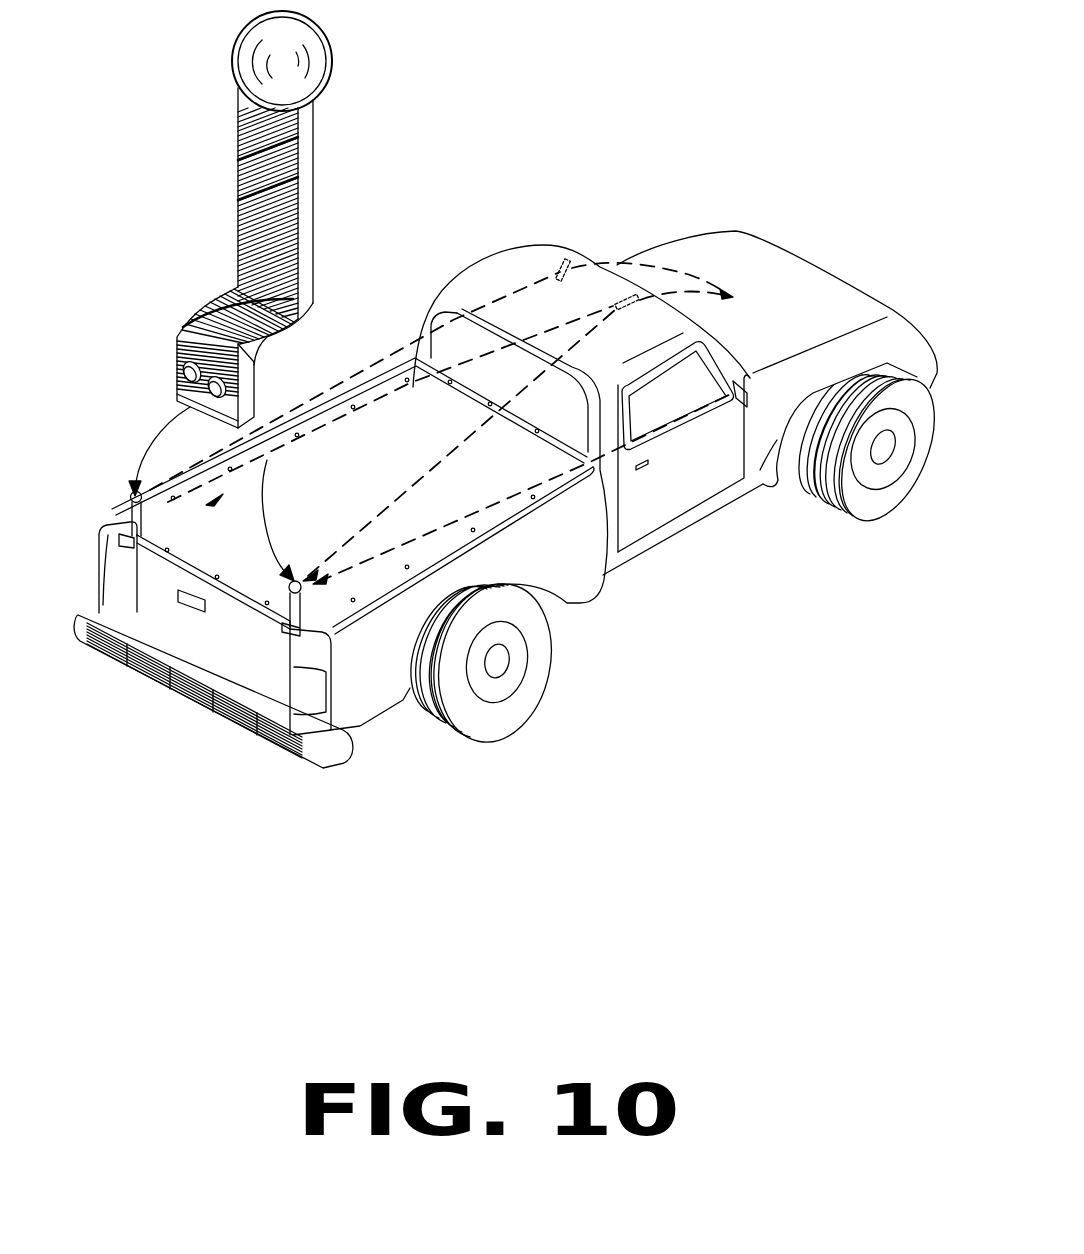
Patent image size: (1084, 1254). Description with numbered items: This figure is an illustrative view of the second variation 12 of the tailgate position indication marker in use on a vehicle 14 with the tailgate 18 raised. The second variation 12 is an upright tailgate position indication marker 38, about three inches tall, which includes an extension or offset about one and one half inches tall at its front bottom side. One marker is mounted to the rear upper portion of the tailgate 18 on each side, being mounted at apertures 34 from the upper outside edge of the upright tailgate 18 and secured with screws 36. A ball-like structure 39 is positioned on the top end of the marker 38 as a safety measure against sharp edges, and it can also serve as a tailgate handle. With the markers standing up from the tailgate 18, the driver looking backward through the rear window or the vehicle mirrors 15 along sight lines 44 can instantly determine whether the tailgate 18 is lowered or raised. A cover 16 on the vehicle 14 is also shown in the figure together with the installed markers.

The second embodiment/variation 12 is at (176, 386).
The vehicle 14 is at (485, 272).
The vehicle mirrors 15 is at (740, 385).
The cover 16 is at (334, 517).
The tailgate 18 is at (227, 660).
The apertures 34 is at (176, 367).
The screws 36 is at (114, 553).
The tailgate position indication marker 38 is at (238, 124).
The ball-like structure 39 is at (233, 52).
The sight lines 44 is at (405, 392).